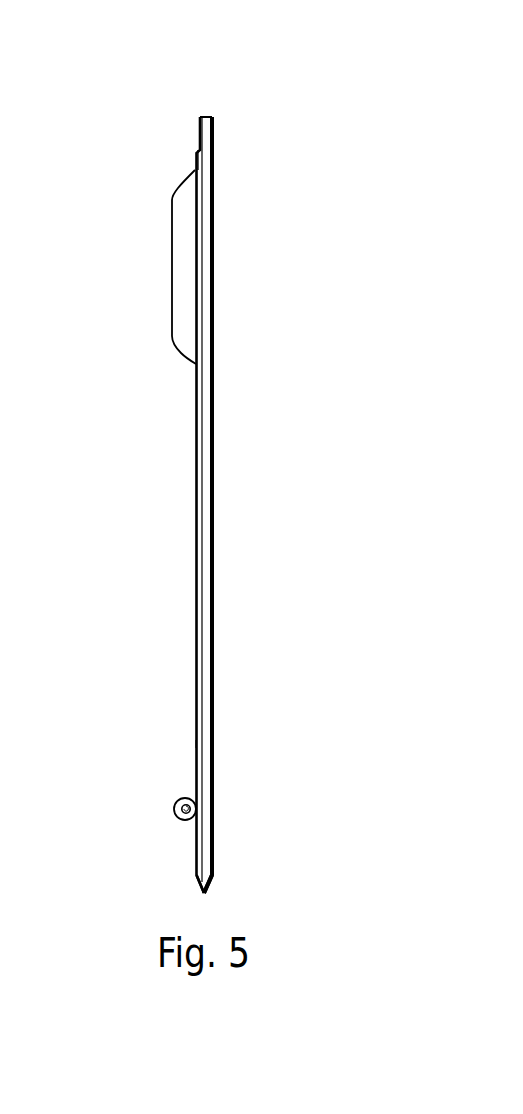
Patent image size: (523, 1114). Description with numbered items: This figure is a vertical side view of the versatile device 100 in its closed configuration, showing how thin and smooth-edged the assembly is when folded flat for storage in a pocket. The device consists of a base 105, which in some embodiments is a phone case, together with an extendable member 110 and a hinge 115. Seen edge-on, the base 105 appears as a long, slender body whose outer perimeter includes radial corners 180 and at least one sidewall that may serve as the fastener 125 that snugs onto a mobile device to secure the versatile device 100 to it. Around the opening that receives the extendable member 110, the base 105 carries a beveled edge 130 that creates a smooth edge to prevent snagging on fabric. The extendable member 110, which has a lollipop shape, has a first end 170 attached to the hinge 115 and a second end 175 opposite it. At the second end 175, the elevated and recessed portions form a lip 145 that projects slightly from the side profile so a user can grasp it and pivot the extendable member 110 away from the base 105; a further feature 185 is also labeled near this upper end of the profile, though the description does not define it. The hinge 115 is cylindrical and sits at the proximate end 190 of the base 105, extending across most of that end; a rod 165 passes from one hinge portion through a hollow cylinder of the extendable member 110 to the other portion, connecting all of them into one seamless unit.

The versatile device 100 is at (287, 86).
The base 105 is at (208, 660).
The extendable member 110 is at (204, 514).
The hinge 115 is at (195, 797).
The fastener 125 is at (213, 797).
The beveled edge 130 is at (213, 381).
The lip 145 is at (172, 196).
The rod 165 is at (174, 811).
The first end 170 is at (196, 744).
The second end 175 is at (195, 165).
The radial corners 180 is at (207, 890).
The top edge 185 is at (200, 118).
The proximate end 190 is at (198, 880).